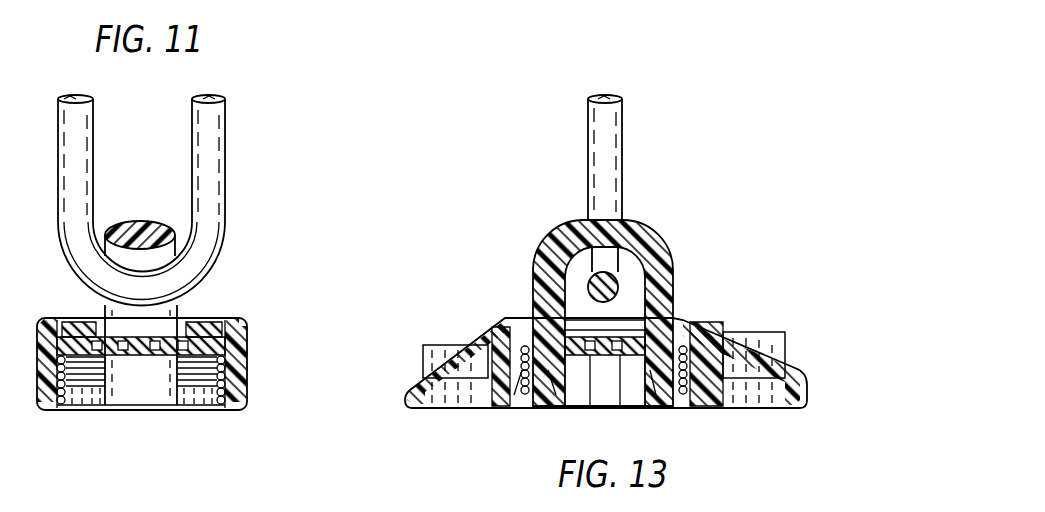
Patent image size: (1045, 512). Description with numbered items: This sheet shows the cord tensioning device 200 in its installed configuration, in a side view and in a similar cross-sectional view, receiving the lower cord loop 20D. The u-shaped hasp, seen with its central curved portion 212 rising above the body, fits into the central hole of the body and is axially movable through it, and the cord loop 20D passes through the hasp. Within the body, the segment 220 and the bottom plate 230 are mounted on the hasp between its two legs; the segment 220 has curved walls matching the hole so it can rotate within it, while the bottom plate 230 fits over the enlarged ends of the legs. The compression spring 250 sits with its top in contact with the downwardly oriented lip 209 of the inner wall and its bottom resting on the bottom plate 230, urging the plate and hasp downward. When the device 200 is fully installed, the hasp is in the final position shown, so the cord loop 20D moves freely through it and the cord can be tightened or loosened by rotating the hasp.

In FIG. 11, the lower cord loop 20D is at (207, 173).
In FIG. 13, the lower cord loop 20D is at (600, 176).
In FIG. 11, the cord tensioning device 200 is at (244, 357).
In FIG. 11, the downwardly oriented lip 209 is at (73, 342).
In FIG. 13, the central curved portion 212 is at (650, 272).
In FIG. 11, the segment 220 is at (195, 340).
In FIG. 11, the bottom plate 230 is at (86, 400).
In FIG. 11, the compression spring 250 is at (200, 407).